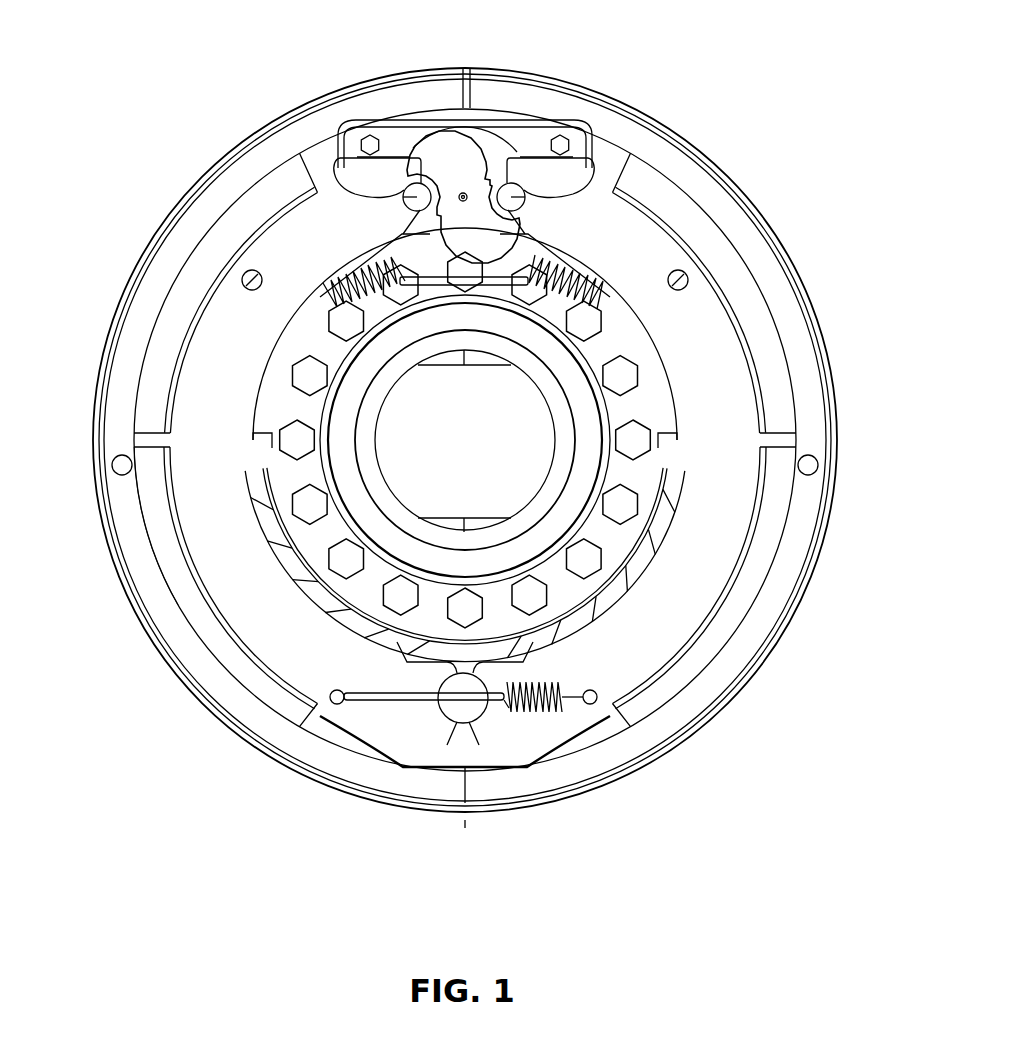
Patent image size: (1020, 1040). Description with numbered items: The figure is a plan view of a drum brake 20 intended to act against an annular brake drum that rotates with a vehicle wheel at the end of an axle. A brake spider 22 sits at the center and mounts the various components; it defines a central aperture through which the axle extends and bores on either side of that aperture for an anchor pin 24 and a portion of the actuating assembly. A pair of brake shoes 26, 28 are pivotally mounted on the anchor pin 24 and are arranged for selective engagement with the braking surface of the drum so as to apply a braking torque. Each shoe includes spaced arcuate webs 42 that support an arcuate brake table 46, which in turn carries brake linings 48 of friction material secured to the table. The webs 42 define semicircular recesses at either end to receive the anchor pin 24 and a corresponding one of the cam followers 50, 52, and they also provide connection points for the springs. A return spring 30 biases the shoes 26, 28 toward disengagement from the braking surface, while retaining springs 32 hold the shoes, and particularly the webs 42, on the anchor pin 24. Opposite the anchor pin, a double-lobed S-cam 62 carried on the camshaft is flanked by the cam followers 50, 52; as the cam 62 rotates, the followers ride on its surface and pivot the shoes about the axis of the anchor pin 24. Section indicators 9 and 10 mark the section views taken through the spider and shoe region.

The section line 9- 9 is at (498, 387).
The section line 10- 10 is at (512, 458).
The brake 20 is at (188, 161).
The brake spider 22 is at (627, 475).
The anchor pin 24 is at (452, 712).
The brake shoe 26 is at (210, 360).
The brake shoe 28 is at (713, 370).
The return spring 30 is at (592, 277).
The retaining spring 32 is at (548, 712).
The web 42 is at (237, 567).
The brake table 46 is at (180, 513).
The brake lining 48 is at (153, 462).
The cam follower 50 is at (403, 197).
The cam follower 52 is at (593, 160).
The cam 62 is at (458, 170).